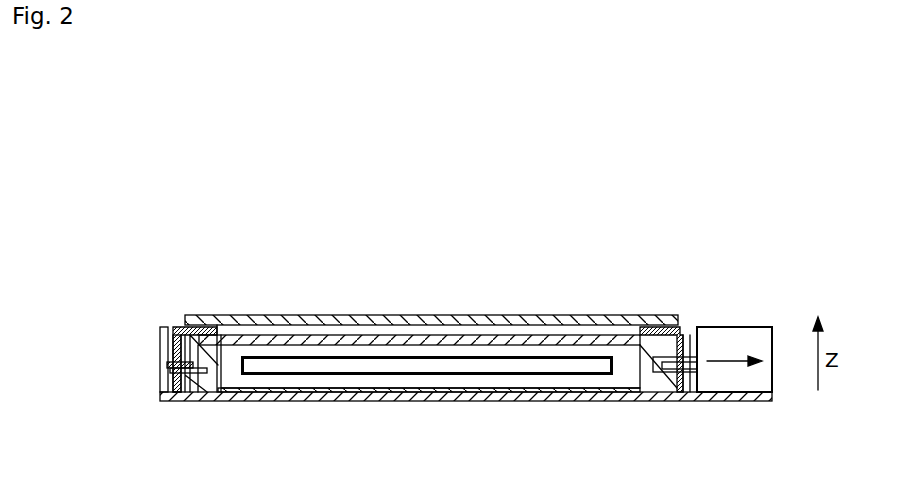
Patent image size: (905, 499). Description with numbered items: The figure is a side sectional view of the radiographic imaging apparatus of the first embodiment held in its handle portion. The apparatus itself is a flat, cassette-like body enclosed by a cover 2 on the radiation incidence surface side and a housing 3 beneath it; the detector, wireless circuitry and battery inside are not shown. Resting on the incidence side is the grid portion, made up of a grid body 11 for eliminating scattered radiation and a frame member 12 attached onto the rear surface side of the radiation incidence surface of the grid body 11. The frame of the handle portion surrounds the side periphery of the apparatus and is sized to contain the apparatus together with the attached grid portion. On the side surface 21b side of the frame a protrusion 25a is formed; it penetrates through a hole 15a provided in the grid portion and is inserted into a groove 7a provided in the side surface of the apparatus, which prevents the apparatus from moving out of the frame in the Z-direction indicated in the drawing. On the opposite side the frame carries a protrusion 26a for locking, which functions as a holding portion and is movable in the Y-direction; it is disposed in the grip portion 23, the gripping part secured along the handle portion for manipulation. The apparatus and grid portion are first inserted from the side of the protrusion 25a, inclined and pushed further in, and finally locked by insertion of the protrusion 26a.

The cover 2 is at (362, 336).
The housing 3 is at (346, 392).
The groove 7a is at (203, 403).
The grid body 11 is at (424, 323).
The frame member 12 is at (654, 326).
The hole 15a is at (168, 403).
The side surface 21b is at (165, 371).
The grip portion 23 is at (727, 377).
The protrusion 25a is at (175, 327).
The protrusion for locking 26a is at (685, 363).